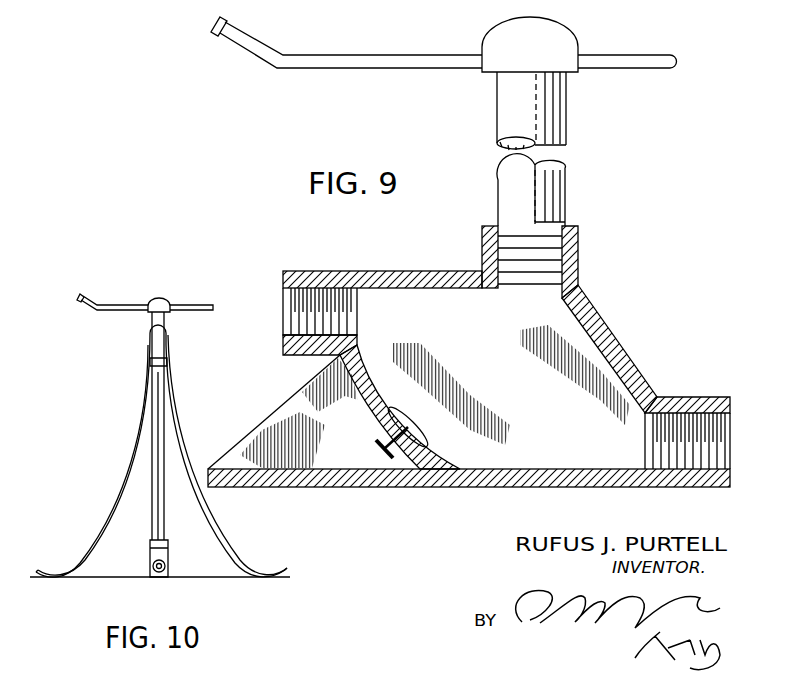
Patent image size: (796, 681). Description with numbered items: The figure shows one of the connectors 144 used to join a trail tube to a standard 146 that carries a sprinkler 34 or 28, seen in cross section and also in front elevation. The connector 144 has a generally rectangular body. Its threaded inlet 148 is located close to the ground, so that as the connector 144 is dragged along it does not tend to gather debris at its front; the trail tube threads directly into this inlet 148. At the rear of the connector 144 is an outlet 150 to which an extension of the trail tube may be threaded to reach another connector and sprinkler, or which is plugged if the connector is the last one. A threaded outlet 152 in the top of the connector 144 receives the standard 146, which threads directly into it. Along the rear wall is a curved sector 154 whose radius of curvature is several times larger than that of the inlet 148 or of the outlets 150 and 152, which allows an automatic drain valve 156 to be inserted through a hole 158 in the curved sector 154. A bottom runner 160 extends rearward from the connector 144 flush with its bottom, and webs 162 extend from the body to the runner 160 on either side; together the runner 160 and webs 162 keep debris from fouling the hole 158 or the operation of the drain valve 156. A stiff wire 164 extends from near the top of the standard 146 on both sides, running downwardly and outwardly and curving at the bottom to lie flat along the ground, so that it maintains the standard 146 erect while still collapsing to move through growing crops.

In FIG. 10, the sprinkler 28 is at (130, 290).
In FIG. 9, the sprinkler 34 is at (420, 68).
In FIG. 9, the connector 144 is at (630, 319).
In FIG. 10, the connector 144 is at (138, 544).
In FIG. 9, the standard 146 is at (563, 200).
In FIG. 10, the standard 146 is at (153, 324).
In FIG. 9, the inlet 148 is at (660, 397).
In FIG. 9, the outlet 150 is at (336, 250).
In FIG. 9, the threaded outlet 152 is at (578, 270).
In FIG. 9, the curved sector 154 is at (362, 388).
In FIG. 9, the automatic drain valve 156 is at (410, 425).
In FIG. 9, the hole 158 is at (384, 426).
In FIG. 9, the bottom runner 160 is at (297, 487).
In FIG. 9, the webs 162 is at (296, 388).
In FIG. 10, the stiff wire 164 is at (140, 432).